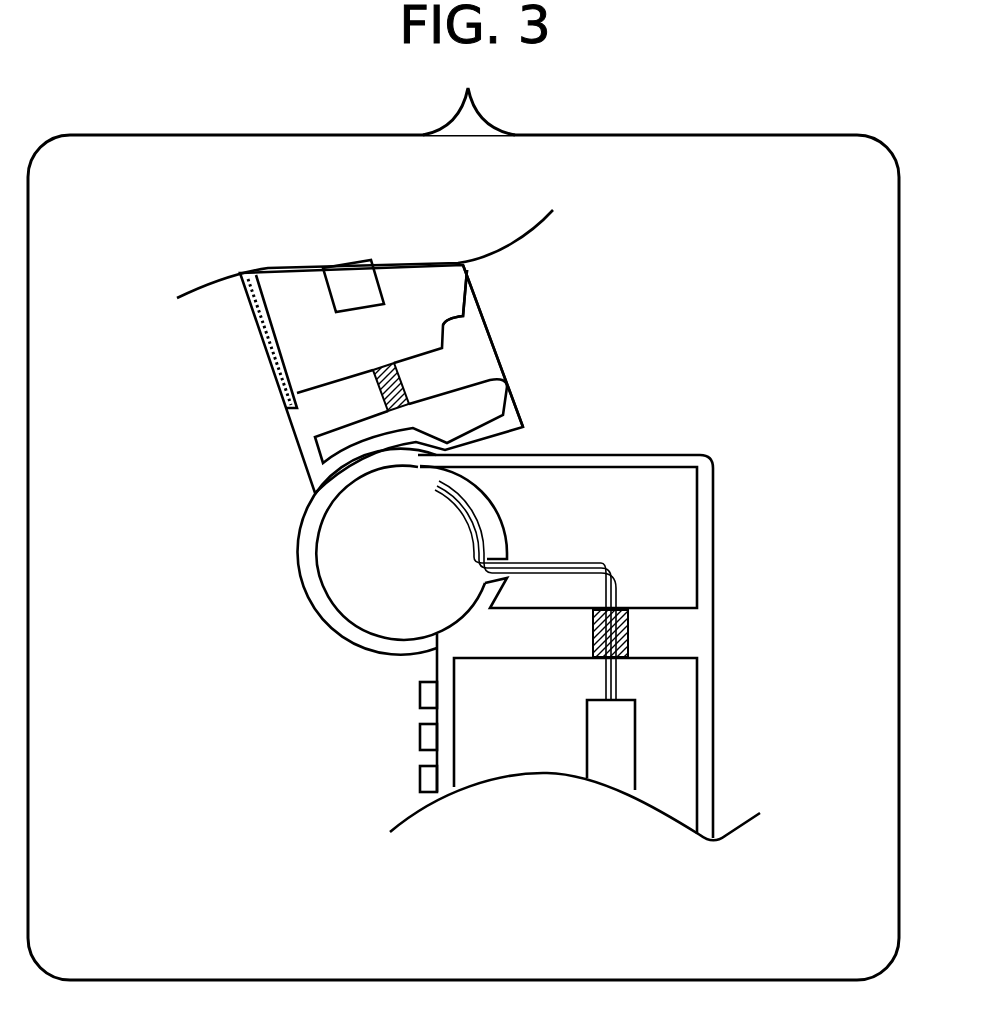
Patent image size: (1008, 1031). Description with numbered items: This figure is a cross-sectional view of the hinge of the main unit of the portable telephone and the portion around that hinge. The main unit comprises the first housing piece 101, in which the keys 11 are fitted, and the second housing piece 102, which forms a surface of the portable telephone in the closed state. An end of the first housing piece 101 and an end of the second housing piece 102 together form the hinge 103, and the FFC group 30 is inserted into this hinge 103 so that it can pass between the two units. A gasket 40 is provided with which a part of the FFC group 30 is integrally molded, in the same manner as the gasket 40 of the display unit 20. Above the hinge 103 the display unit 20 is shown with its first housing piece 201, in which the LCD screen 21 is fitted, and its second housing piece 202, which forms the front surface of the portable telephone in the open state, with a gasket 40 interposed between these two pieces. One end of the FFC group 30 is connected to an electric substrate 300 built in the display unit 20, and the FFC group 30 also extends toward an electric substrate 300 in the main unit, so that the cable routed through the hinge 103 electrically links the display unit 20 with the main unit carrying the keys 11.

The display unit 20 is at (545, 268).
The LCD screen 21 is at (263, 353).
The FFC group 30 is at (532, 548).
The gasket 40 is at (290, 428).
The first housing piece 101 is at (437, 667).
The second housing piece 102 is at (668, 453).
The hinge 103 is at (296, 600).
The first housing piece 201 is at (300, 428).
The second housing piece 202 is at (500, 345).
The electric substrate 300 is at (342, 283).
The keys 11 is at (418, 693).